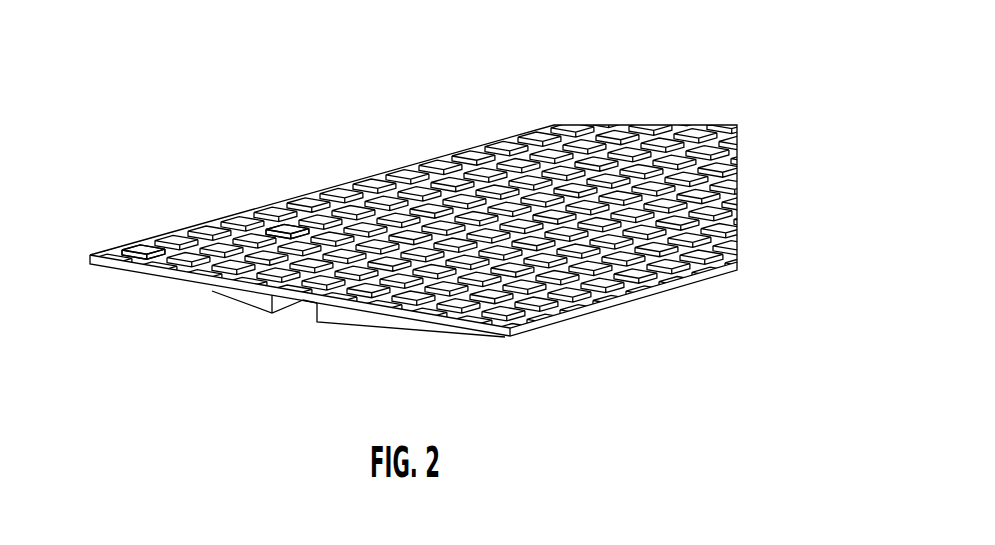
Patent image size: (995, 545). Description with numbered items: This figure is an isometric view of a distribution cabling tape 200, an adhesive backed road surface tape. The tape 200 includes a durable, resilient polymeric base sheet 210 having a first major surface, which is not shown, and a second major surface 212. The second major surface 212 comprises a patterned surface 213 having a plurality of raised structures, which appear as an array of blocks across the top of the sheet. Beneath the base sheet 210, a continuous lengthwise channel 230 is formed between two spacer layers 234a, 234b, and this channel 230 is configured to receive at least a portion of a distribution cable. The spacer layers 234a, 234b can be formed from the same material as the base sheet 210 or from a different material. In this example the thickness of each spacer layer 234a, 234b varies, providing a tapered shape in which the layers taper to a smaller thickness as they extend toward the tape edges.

The distribution cabling tape 200 is at (176, 105).
The resilient polymeric base sheet 210 is at (158, 252).
The second major surface 212 is at (123, 249).
The patterned surface 213 is at (272, 232).
The continuous lengthwise channel 230 is at (303, 309).
The spacer layer 234a is at (237, 291).
The spacer layer 234b is at (367, 318).